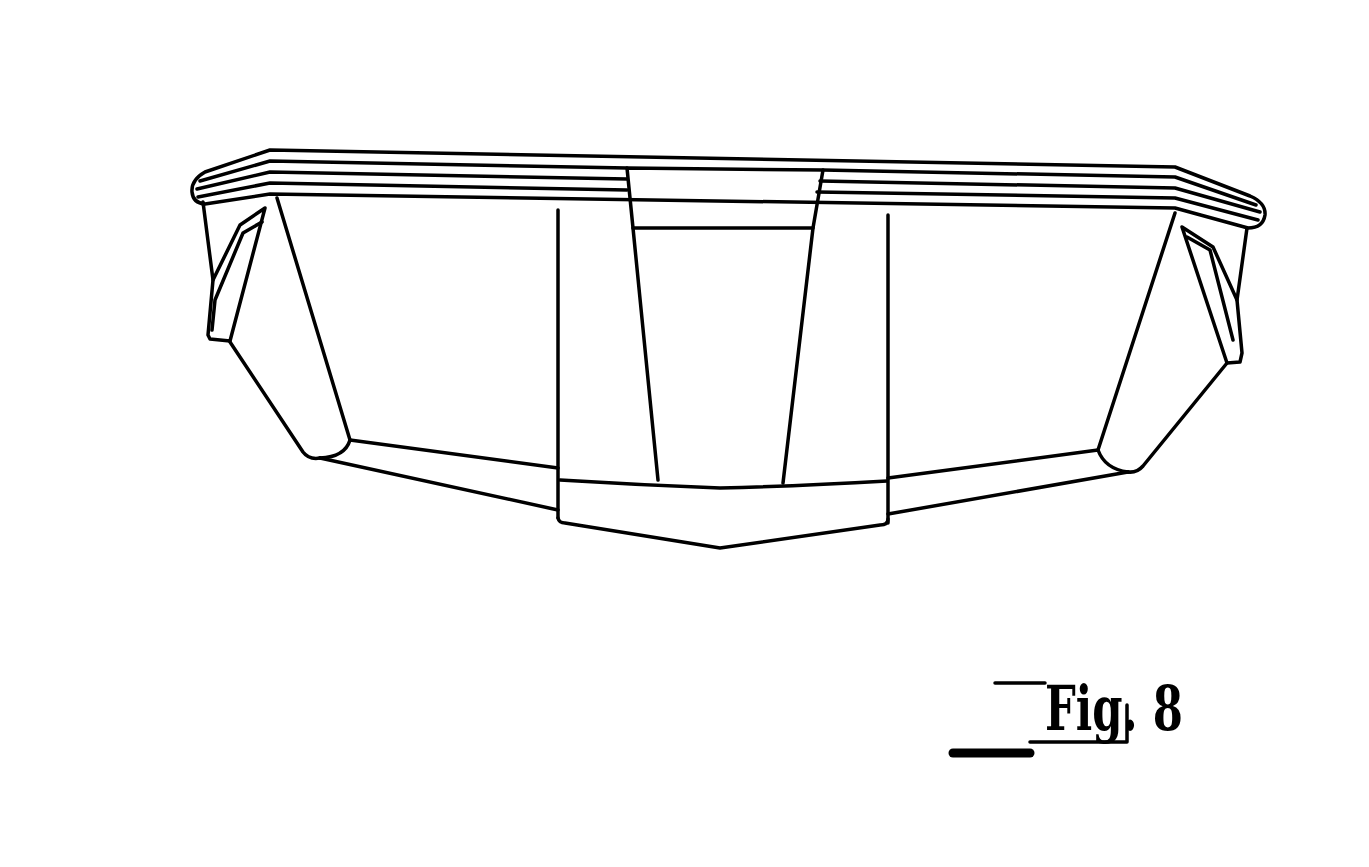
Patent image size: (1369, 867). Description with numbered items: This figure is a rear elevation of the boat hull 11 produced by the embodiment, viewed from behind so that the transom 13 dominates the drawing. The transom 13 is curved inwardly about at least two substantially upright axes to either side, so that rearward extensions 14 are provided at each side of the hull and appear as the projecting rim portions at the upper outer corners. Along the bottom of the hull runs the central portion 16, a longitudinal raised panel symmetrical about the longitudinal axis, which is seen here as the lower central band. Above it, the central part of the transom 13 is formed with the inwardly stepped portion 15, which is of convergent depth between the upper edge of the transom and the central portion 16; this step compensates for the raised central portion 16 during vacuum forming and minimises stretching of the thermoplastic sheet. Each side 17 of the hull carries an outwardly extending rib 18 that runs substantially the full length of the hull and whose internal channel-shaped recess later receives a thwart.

The boat hull 11 is at (907, 131).
The transom 13 is at (458, 385).
The rearward extensions 14 is at (307, 163).
The inwardly stepped portion 15 is at (725, 344).
The central portion 16 is at (773, 522).
The side 17 is at (285, 382).
The rib 18 is at (225, 294).